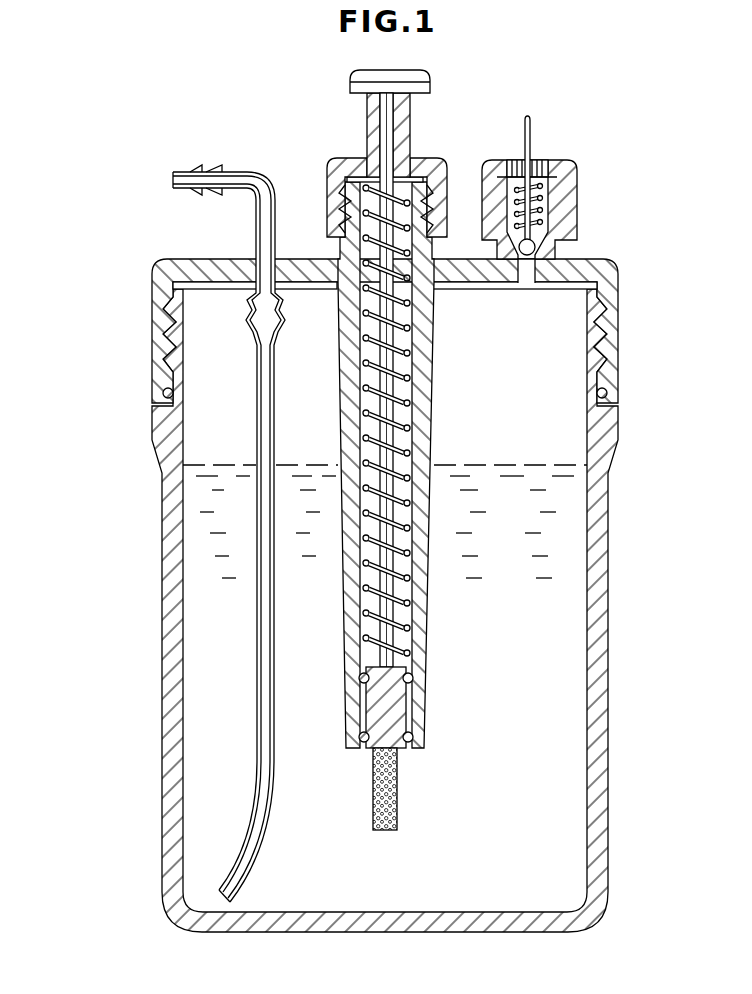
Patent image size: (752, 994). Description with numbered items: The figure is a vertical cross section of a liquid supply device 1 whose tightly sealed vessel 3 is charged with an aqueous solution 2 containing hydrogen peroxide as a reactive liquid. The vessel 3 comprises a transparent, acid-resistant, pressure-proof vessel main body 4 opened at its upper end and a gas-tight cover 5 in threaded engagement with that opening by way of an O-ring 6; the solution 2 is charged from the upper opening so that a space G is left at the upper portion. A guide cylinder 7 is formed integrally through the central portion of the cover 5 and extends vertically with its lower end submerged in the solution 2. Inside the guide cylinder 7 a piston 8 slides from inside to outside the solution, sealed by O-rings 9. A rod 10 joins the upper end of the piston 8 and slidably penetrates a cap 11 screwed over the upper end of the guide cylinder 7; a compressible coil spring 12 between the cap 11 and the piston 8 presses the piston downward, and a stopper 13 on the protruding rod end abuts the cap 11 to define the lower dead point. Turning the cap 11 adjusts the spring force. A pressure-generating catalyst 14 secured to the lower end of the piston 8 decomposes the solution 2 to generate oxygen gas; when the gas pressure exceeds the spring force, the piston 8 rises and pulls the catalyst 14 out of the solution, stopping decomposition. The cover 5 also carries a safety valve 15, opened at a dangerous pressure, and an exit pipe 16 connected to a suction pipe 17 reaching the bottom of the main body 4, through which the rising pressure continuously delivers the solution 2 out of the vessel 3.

The liquid supply device 1 is at (518, 85).
The aqueous solution 2 is at (570, 678).
The tightly sealed vessel 3 is at (101, 334).
The vessel main body 4 is at (162, 688).
The gas-tight cover 5 is at (160, 293).
The O-ring 6 is at (165, 392).
The guide cylinder 7 is at (430, 365).
The piston 8 is at (372, 697).
The O-rings 9 is at (413, 737).
The rod 10 is at (376, 424).
The cap 11 is at (327, 167).
The compressible coil spring 12 is at (397, 310).
The stopper 13 is at (430, 75).
The pressure-generating catalyst 14 is at (398, 817).
The safety valve 15 is at (587, 156).
The exit pipe 16 is at (183, 168).
The suction pipe 17 is at (263, 833).
The space G is at (553, 405).